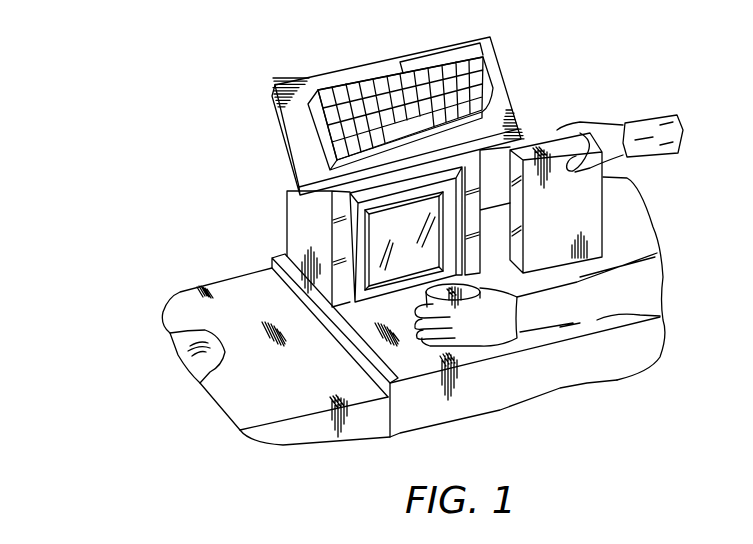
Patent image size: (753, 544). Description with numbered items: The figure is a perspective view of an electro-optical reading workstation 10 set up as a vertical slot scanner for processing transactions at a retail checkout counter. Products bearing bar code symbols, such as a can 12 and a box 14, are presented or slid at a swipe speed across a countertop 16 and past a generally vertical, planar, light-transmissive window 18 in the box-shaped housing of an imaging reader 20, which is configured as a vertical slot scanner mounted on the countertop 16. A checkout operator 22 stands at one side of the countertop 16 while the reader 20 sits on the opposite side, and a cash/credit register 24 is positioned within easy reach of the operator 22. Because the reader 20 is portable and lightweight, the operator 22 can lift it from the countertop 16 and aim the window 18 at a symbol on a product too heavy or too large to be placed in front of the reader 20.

The electro-optical reading workstation 10 is at (558, 95).
The can 12 is at (462, 345).
The box 14 is at (593, 172).
The countertop 16 is at (397, 370).
The light-transmissive window 18 is at (375, 243).
The imaging reader 20 is at (378, 202).
The checkout operator 22 is at (653, 282).
The cash/credit register 24 is at (363, 72).